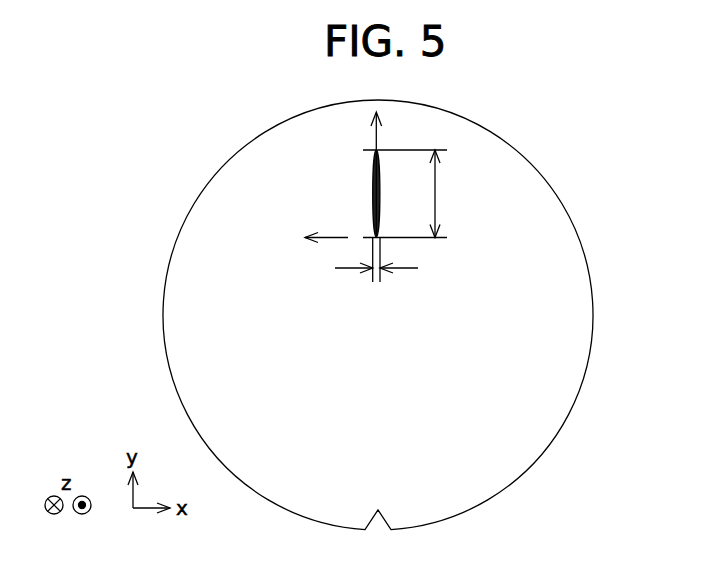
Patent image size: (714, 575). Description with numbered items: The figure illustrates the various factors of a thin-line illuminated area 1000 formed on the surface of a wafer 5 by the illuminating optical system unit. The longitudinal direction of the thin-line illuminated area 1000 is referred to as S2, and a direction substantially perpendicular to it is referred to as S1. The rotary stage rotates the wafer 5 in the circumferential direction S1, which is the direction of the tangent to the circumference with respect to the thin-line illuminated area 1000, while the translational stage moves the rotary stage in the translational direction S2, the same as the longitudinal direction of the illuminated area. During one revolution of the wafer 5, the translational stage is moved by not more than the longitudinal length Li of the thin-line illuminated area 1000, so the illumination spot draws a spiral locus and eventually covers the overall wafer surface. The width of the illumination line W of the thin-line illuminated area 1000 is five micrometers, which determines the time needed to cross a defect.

The wafer 5 is at (568, 263).
The thin-line illuminated area 1000 is at (372, 166).
The circumferential direction S1 is at (309, 238).
The longitudinal direction S2 is at (396, 126).
The longitudinal length Li is at (415, 194).
The width of illumination line W is at (386, 286).